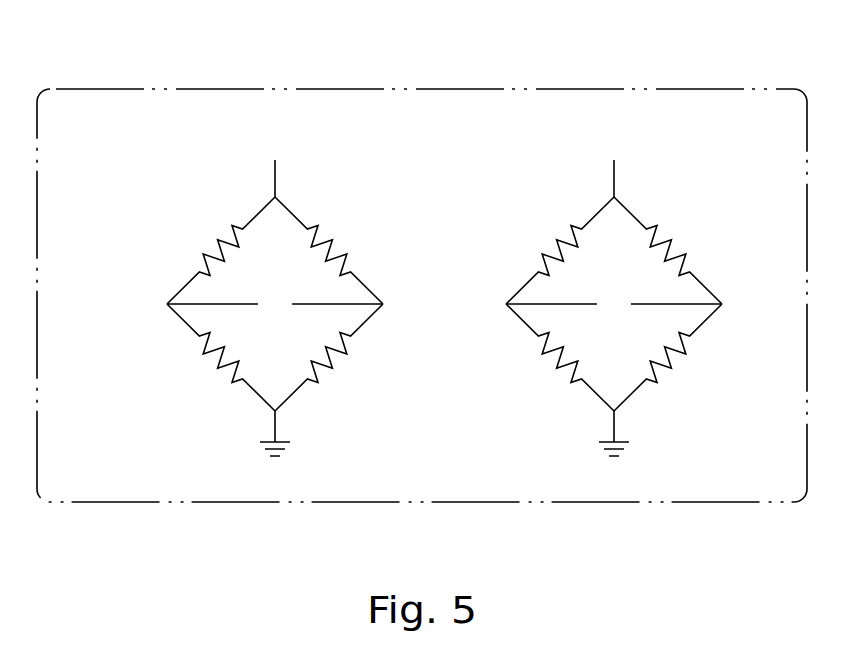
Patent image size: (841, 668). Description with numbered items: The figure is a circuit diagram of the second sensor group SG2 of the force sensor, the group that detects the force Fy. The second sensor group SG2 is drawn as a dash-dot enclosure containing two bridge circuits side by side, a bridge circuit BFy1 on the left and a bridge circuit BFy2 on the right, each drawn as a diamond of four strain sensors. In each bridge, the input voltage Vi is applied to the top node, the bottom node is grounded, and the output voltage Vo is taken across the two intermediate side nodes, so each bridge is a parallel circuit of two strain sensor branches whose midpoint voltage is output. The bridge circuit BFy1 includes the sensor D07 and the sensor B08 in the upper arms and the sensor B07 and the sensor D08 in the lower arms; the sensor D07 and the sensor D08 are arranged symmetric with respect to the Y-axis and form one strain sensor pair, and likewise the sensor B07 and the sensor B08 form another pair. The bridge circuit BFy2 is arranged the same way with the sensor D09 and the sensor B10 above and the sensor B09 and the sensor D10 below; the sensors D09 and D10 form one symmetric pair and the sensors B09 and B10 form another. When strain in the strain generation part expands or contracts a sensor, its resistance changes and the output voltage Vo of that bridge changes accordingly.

The second sensor group SG2 is at (150, 89).
The bridge circuit BFy1 is at (162, 163).
The bridge circuit BFy2 is at (531, 163).
The sensor D07 is at (214, 250).
The sensor B08 is at (331, 250).
The sensor B07 is at (213, 357).
The sensor D08 is at (331, 357).
The sensor D09 is at (553, 250).
The sensor B10 is at (670, 250).
The sensor B09 is at (553, 357).
The sensor D10 is at (671, 357).